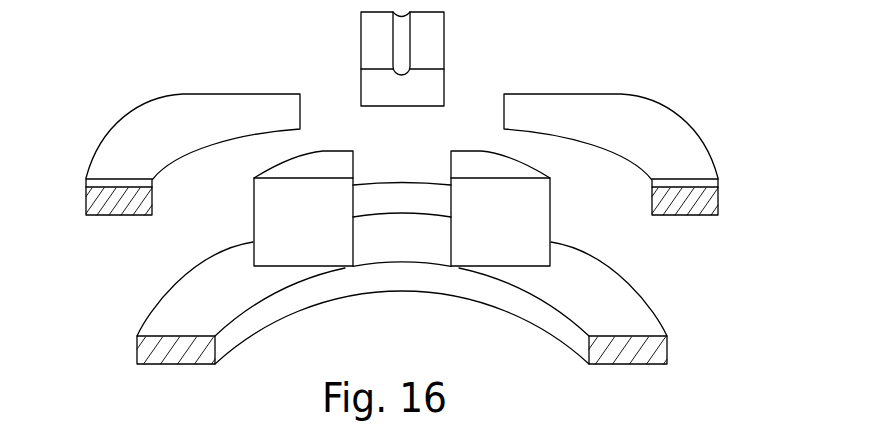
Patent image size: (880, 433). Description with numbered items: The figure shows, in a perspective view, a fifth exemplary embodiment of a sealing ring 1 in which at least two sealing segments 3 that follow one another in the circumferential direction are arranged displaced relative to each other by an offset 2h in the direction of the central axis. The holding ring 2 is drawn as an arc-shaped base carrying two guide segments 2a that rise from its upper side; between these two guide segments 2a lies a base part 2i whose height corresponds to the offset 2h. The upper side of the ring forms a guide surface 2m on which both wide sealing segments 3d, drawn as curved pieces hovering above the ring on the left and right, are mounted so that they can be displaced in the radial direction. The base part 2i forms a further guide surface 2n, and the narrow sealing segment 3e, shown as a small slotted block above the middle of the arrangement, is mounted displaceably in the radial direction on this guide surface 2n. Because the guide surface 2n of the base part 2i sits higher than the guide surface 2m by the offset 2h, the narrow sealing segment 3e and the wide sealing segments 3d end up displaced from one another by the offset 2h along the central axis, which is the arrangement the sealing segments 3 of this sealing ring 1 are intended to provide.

The sealing ring 1 is at (600, 27).
The holding ring 2 is at (431, 303).
The guide segments 2a is at (267, 175).
The offset 2h is at (383, 280).
The base part 2i is at (398, 240).
The guide surface 2m is at (607, 280).
The guide surface 2n is at (383, 206).
The sealing segments 3 is at (419, 113).
The wide sealing segments 3d is at (130, 133).
The narrow sealing segment 3e is at (432, 36).